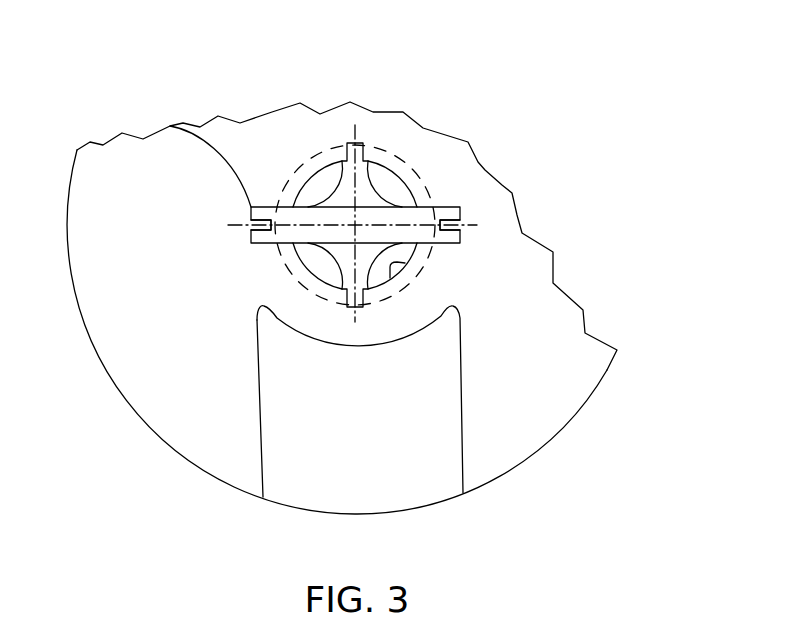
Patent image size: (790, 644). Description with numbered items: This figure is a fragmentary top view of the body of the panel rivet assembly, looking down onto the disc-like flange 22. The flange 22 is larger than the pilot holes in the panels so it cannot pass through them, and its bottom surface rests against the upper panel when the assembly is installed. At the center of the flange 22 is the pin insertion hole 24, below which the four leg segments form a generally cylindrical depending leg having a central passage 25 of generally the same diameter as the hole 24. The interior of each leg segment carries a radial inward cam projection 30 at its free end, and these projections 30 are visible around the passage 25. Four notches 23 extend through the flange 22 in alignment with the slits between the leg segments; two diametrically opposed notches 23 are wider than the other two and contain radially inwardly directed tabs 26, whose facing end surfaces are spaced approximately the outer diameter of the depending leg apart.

The disc-like flange 22 is at (510, 405).
The notches 23 is at (261, 212).
The central pin insertion hole 24 is at (405, 263).
The central passage 25 is at (367, 203).
The tabs 26 is at (170, 126).
The radial inward cam projection 30 is at (328, 197).